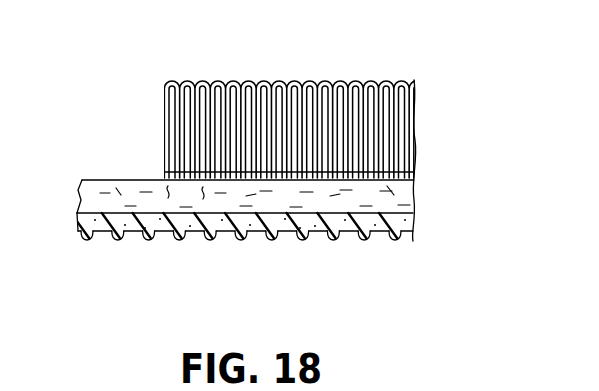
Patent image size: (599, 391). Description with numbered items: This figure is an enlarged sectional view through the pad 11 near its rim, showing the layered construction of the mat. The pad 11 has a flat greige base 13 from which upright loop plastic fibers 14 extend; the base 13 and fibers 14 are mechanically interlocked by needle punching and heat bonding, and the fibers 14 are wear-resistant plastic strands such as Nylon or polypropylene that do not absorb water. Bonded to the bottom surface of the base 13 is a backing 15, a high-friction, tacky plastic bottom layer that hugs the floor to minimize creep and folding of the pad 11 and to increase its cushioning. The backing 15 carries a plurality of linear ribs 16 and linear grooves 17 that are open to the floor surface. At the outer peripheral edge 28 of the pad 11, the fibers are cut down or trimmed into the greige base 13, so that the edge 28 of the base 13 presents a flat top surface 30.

The pad 11 is at (333, 78).
The greige base 13 is at (250, 174).
The upright loop plastic fibers 14 is at (403, 132).
The backing 15 is at (279, 259).
The linear ribs 16 is at (244, 240).
The linear grooves 17 is at (321, 239).
The outer peripheral edge 28 is at (92, 197).
The flat top surface 30 is at (114, 179).